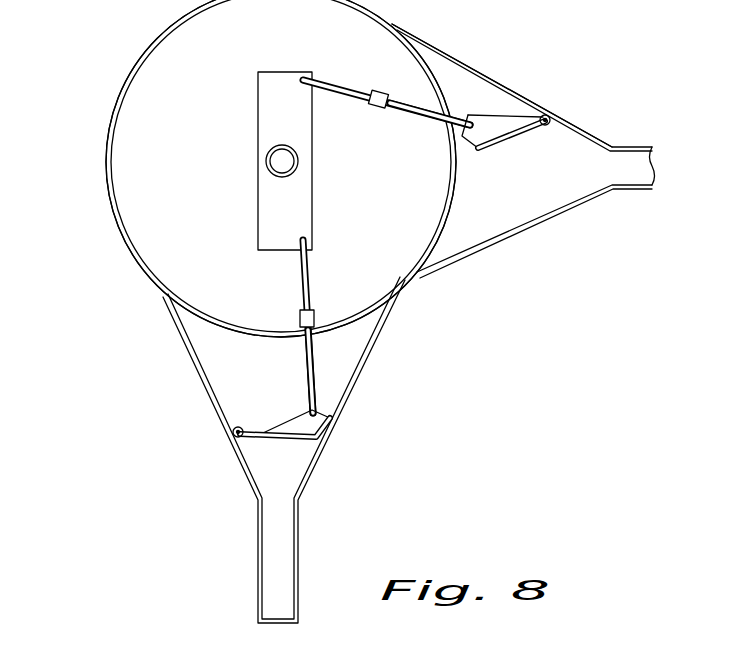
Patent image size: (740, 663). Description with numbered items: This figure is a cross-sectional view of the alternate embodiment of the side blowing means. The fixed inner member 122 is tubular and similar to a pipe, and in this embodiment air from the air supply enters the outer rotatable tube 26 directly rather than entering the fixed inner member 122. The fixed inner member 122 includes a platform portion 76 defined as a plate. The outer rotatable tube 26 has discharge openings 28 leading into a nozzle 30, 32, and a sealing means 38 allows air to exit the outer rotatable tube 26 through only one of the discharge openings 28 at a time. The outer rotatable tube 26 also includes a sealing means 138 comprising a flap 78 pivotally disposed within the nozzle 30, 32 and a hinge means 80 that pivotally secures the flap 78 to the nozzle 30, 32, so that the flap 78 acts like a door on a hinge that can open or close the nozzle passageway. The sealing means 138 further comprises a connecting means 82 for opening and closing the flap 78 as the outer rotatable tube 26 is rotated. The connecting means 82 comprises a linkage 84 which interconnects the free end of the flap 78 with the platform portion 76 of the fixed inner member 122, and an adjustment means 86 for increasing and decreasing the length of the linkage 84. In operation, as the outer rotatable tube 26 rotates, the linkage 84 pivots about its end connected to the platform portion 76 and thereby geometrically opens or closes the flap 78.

The outer rotatable tube 26 is at (122, 238).
The discharge opening 28 is at (457, 155).
The nozzle 30 is at (540, 226).
The nozzle 32 is at (540, 226).
The sealing means 38 is at (330, 442).
The platform portion 76 is at (303, 212).
The flap 78 is at (504, 129).
The hinge means 80 is at (551, 117).
The connecting means 82 is at (330, 98).
The linkage 84 is at (421, 110).
The adjustment means 86 is at (378, 92).
The fixed inner member 122 is at (267, 166).
The sealing means 138 is at (493, 119).